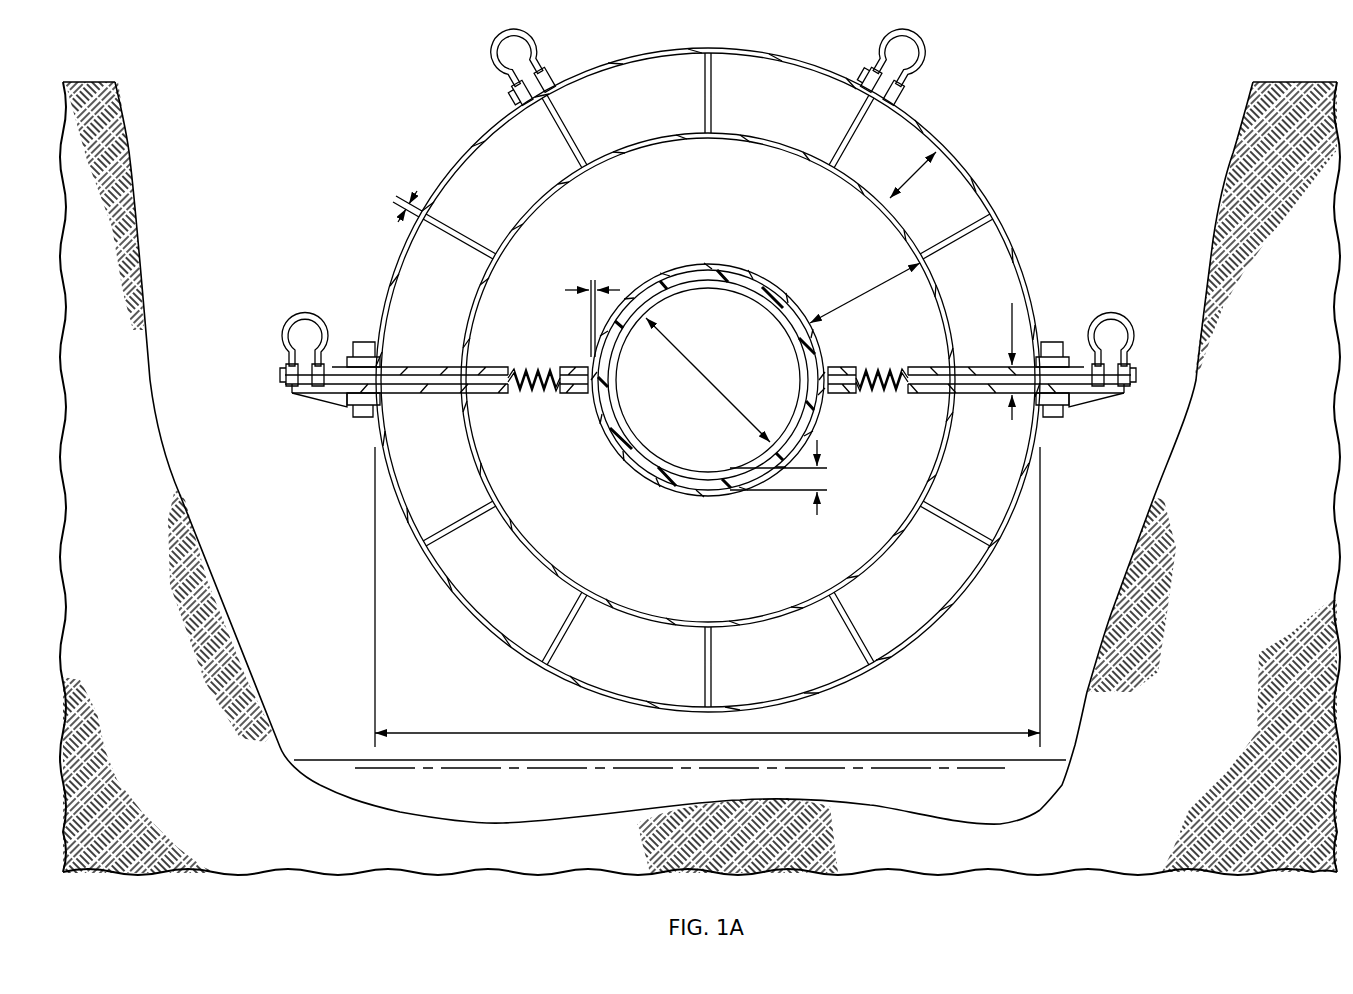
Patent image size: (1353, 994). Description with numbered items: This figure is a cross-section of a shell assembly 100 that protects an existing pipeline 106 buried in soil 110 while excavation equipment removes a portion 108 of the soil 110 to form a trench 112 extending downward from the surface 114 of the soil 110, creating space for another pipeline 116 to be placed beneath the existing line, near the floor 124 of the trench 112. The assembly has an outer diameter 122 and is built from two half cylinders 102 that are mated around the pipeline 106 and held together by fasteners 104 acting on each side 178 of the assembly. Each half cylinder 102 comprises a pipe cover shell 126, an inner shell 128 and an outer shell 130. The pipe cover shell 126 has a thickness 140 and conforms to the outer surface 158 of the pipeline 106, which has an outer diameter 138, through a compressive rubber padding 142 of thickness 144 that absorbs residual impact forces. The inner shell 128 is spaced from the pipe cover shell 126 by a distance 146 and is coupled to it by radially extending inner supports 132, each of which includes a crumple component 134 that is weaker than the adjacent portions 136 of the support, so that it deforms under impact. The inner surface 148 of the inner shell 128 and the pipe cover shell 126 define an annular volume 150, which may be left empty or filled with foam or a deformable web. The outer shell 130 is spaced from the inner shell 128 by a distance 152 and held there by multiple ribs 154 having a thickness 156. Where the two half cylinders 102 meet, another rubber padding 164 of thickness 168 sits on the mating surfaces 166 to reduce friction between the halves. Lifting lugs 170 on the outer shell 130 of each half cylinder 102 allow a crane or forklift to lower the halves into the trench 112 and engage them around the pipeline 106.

The shell assembly 100 is at (1095, 72).
The half cylinder 102 is at (702, 397).
The fastener 104 is at (360, 418).
The pipeline 106 is at (634, 436).
The portion of the soil 108 is at (500, 706).
The soil 110 is at (1220, 559).
The trench 112 is at (1140, 226).
The surface of the soil 114 is at (1300, 82).
The another pipeline 116 is at (342, 760).
The outer diameter of the shell assembly 122 is at (905, 733).
The floor of the trench 124 is at (895, 768).
The pipe cover shell 126 is at (710, 263).
The inner shell 128 is at (524, 540).
The outer shell 130 is at (474, 617).
The inner support 132 is at (705, 397).
The crumple component 134 is at (535, 377).
The adjacent portions of the inner support 136 is at (510, 394).
The outer diameter of the pipeline 138 is at (716, 378).
The thickness of the pipe cover shell 140 is at (580, 285).
The rubber padding 142 is at (652, 288).
The thickness of the rubber padding 144 is at (817, 515).
The distance between inner shell and pipe cover shell 146 is at (866, 292).
The inner surface of the inner shell 148 is at (558, 180).
The annular volume 150 is at (688, 179).
The distance between outer shell and inner shell 152 is at (915, 172).
The rib 154 is at (952, 240).
The thickness of the ribs 156 is at (405, 190).
The outer surface of the pipeline 158 is at (764, 277).
The rubber padding 164 is at (438, 375).
The mating surfaces 166 is at (472, 367).
The thickness of the rubber padding 168 is at (1015, 305).
The lifting lug 170 is at (537, 50).
The side 178 is at (300, 408).